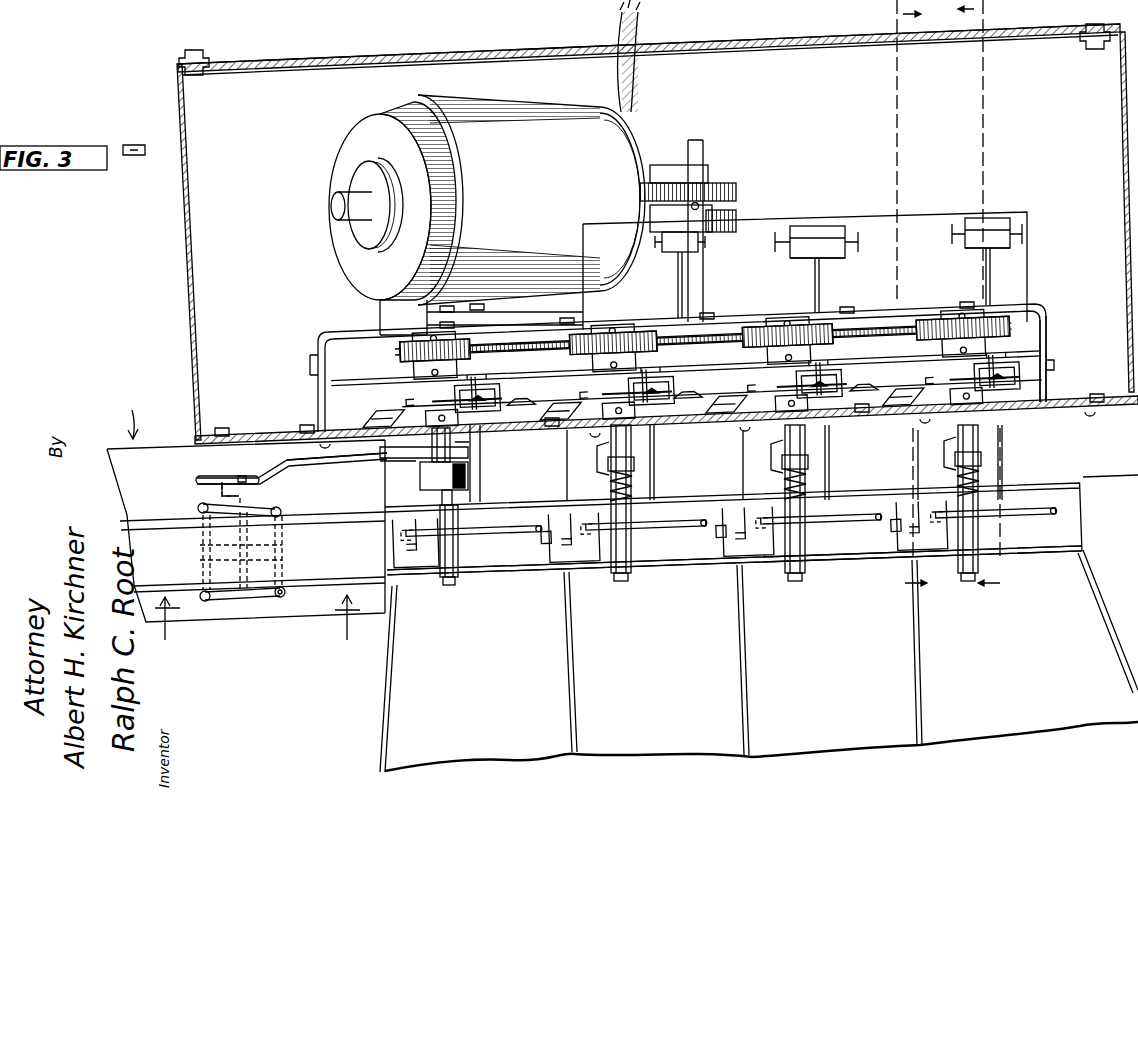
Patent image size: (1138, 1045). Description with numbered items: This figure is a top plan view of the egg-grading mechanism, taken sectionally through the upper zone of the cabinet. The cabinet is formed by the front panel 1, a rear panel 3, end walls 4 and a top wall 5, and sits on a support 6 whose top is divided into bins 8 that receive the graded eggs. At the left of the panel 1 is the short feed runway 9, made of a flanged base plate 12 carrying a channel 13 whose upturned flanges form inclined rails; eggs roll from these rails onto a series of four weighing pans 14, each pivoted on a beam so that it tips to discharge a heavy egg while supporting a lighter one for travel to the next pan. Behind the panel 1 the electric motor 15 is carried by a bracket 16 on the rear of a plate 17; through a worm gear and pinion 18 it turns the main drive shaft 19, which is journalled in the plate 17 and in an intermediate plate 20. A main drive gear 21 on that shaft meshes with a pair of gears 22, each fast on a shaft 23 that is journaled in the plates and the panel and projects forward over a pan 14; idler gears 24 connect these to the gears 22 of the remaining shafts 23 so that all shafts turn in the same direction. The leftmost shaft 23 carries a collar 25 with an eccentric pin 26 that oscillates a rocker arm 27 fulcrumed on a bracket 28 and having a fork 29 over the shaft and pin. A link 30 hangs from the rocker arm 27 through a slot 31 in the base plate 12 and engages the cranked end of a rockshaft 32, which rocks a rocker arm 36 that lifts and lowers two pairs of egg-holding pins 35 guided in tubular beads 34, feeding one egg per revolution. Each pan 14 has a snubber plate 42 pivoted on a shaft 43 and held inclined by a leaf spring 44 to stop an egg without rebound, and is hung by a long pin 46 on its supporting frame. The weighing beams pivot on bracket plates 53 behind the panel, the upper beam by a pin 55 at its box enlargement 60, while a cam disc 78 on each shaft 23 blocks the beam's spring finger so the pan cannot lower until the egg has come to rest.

The panel 1 is at (258, 437).
The rear panel 3 is at (322, 64).
The end walls 4 is at (1120, 170).
The top wall 5 is at (257, 627).
The support 6 is at (895, 296).
The bins 8 is at (498, 677).
The feed runway 9 is at (130, 419).
The base plate 12 is at (150, 482).
The channel 13 is at (325, 558).
The weighing pan 14 is at (496, 585).
The electric motor 15 is at (335, 135).
The bracket 16 is at (430, 320).
The plate 17 is at (1020, 306).
The worm gear and pinion 18 is at (737, 188).
The main drive shaft 19 is at (705, 275).
The intermediate plate 20 is at (1050, 322).
The main drive gear 21 is at (740, 338).
The gears 22 is at (656, 334).
The shaft 23 is at (435, 397).
The idler gears 24 is at (855, 330).
The collar 25 is at (422, 478).
The pin 26 is at (484, 452).
The rocker arm 27 is at (322, 467).
The bracket 28 is at (345, 463).
The fork 29 is at (481, 469).
The link 30 is at (222, 482).
The slot 31 is at (200, 479).
The rockshaft 32 is at (222, 497).
The tubular beads 34 is at (277, 507).
The pins 35 is at (281, 510).
The rocker arm 36 is at (200, 555).
The snubber plate 42 is at (600, 495).
The shaft 43 is at (760, 490).
The leaf spring 44 is at (485, 542).
The pin 46 is at (724, 543).
The bracket plates 53 is at (512, 404).
The pin 55 is at (1062, 380).
The box enlargement 60 is at (475, 385).
The cam disc 78 is at (672, 407).